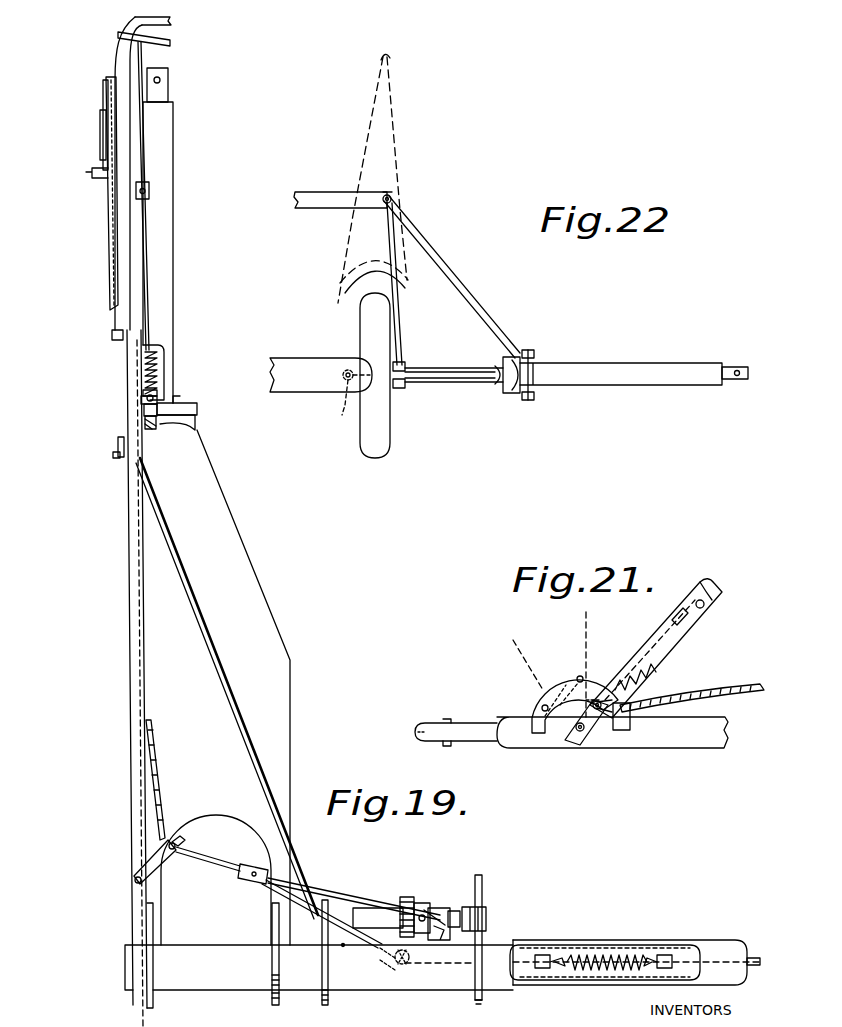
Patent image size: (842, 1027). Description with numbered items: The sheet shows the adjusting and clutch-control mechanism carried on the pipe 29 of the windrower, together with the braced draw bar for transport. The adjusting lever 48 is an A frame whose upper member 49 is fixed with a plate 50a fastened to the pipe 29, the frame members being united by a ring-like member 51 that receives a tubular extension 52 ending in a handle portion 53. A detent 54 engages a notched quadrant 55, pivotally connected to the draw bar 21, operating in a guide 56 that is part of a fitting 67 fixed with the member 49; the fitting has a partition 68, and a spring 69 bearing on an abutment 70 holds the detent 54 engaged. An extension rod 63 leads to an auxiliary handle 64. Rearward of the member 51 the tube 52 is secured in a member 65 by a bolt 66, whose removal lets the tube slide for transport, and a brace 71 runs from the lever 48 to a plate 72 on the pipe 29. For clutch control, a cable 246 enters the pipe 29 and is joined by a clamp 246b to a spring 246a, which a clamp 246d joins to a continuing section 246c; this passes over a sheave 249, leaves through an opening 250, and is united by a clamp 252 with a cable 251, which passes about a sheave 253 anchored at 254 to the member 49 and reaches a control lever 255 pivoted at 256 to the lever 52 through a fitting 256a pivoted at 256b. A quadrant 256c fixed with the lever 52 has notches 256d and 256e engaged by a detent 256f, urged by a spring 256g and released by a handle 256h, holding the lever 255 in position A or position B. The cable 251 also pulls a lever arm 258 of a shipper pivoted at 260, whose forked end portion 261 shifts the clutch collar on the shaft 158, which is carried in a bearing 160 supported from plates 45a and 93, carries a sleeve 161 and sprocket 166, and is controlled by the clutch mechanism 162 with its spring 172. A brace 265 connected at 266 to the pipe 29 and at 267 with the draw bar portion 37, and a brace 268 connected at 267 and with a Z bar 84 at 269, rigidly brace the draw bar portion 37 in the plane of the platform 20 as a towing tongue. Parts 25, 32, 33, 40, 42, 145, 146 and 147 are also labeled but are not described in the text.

In FIG. 22, the platform 20 is at (306, 184).
In FIG. 19, the draw bar 21 is at (266, 585).
In FIG. 22, the wheel 25 is at (385, 428).
In FIG. 19, the pipe 29 is at (724, 939).
In FIG. 22, the pipe 29 is at (330, 367).
In FIG. 19, the bracket 32 is at (197, 407).
In FIG. 19, the plate 33 is at (240, 560).
In FIG. 19, the draw bar portion 37 is at (168, 152).
In FIG. 22, the draw bar portion 37 is at (645, 375).
In FIG. 19, the bracket plate 40 is at (186, 400).
In FIG. 19, the end fitting 42 is at (168, 72).
In FIG. 22, the end fitting 42 is at (768, 344).
In FIG. 19, the plate 45a is at (279, 972).
In FIG. 19, the adjusting lever 48 is at (122, 314).
In FIG. 19, the upper member 49 is at (127, 530).
In FIG. 19, the plate 50a is at (158, 966).
In FIG. 19, the ring-like member 51 is at (112, 338).
In FIG. 19, the tubular extension 52 is at (110, 262).
In FIG. 21, the tubular extension 52 is at (560, 742).
In FIG. 19, the handle portion 53 is at (170, 18).
In FIG. 21, the handle portion 53 is at (410, 738).
In FIG. 19, the detent 54 is at (144, 410).
In FIG. 19, the notched bar or quadrant 55 is at (145, 423).
In FIG. 19, the guide 56 is at (195, 424).
In FIG. 19, the extension rod 63 is at (147, 246).
In FIG. 19, the auxiliary handle 64 is at (172, 41).
In FIG. 19, the member 65 is at (118, 441).
In FIG. 19, the bolt 66 is at (113, 457).
In FIG. 19, the fitting 67 is at (166, 360).
In FIG. 19, the partition 68 is at (141, 400).
In FIG. 19, the spring 69 is at (155, 397).
In FIG. 19, the abutment 70 is at (143, 392).
In FIG. 19, the brace 71 is at (255, 745).
In FIG. 19, the plate 72 is at (328, 1005).
In FIG. 22, the Z bar 84 is at (392, 188).
In FIG. 19, the plate 93 is at (484, 1001).
In FIG. 22, the hub fitting 145 is at (408, 362).
In FIG. 22, the strut 146 is at (402, 326).
In FIG. 22, the swing path 147 is at (400, 125).
In FIG. 19, the shaft 158 is at (456, 910).
In FIG. 19, the bearing 160 is at (488, 906).
In FIG. 19, the sleeve 161 is at (382, 905).
In FIG. 19, the clutch mechanism 162 is at (432, 940).
In FIG. 19, the sprocket 166 is at (410, 892).
In FIG. 19, the spring 172 is at (483, 926).
In FIG. 19, the cable 246 is at (758, 956).
In FIG. 19, the spring 246a is at (615, 952).
In FIG. 19, the clamp 246b is at (665, 952).
In FIG. 19, the continuing section 246c is at (290, 900).
In FIG. 19, the clamp 246d is at (545, 950).
In FIG. 19, the sheave 249 is at (395, 965).
In FIG. 19, the opening 250 is at (343, 947).
In FIG. 19, the cable 251 is at (248, 840).
In FIG. 21, the cable 251 is at (696, 690).
In FIG. 19, the clamp 252 is at (240, 878).
In FIG. 19, the sheave 253 is at (178, 838).
In FIG. 19, the anchorage 254 is at (134, 880).
In FIG. 19, the control lever 255 is at (88, 172).
In FIG. 21, the control lever 255 is at (706, 578).
In FIG. 21, the pivot 256 is at (586, 742).
In FIG. 21, the fitting 256a is at (628, 714).
In FIG. 21, the pivot 256b is at (632, 730).
In FIG. 19, the quadrant 256c is at (100, 88).
In FIG. 21, the quadrant 256c is at (532, 710).
In FIG. 21, the notch 256d is at (572, 675).
In FIG. 19, the notch 256e is at (100, 128).
In FIG. 21, the notch 256e is at (535, 700).
In FIG. 21, the detent 256f is at (622, 672).
In FIG. 21, the spring 256g is at (660, 630).
In FIG. 21, the handle 256h is at (708, 603).
In FIG. 19, the lever arm 258 is at (414, 930).
In FIG. 19, the pivot 260 is at (462, 950).
In FIG. 19, the forked end portion 261 is at (436, 905).
In FIG. 22, the brace 265 is at (468, 372).
In FIG. 22, the connection 266 is at (342, 416).
In FIG. 22, the connection 267 is at (522, 400).
In FIG. 22, the brace 268 is at (490, 313).
In FIG. 22, the connection 269 is at (392, 199).
In FIG. 21, the position A is at (591, 624).
In FIG. 21, the position B is at (516, 648).